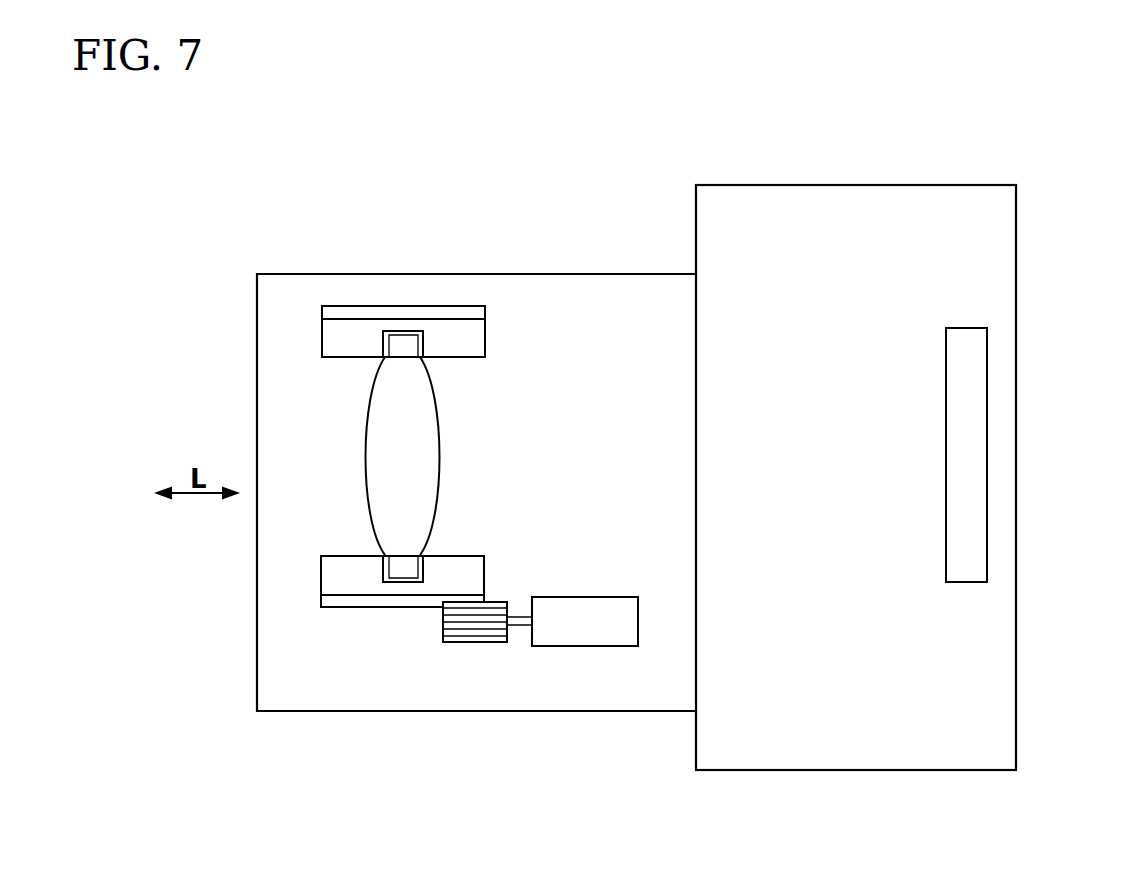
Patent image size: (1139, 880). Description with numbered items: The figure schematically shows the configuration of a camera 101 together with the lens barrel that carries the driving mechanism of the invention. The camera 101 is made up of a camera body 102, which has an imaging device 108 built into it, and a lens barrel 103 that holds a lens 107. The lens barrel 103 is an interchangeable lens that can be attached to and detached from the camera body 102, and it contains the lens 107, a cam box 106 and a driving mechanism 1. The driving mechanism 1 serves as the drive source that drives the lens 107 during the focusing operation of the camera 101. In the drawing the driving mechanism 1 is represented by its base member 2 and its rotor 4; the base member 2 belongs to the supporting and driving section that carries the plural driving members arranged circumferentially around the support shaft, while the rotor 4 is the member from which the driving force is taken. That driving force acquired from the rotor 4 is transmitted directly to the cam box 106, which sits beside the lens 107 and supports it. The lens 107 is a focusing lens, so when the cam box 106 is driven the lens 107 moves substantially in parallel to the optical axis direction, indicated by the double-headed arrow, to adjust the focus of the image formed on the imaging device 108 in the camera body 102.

The driving mechanism 1 is at (608, 575).
The base member 2 is at (582, 632).
The rotor 4 is at (485, 632).
The camera 101 is at (1062, 200).
The camera body 102 is at (888, 752).
The lens barrel 103 is at (585, 283).
The cam box 106 is at (344, 597).
The lens 107 is at (430, 452).
The imaging device 108 is at (952, 452).